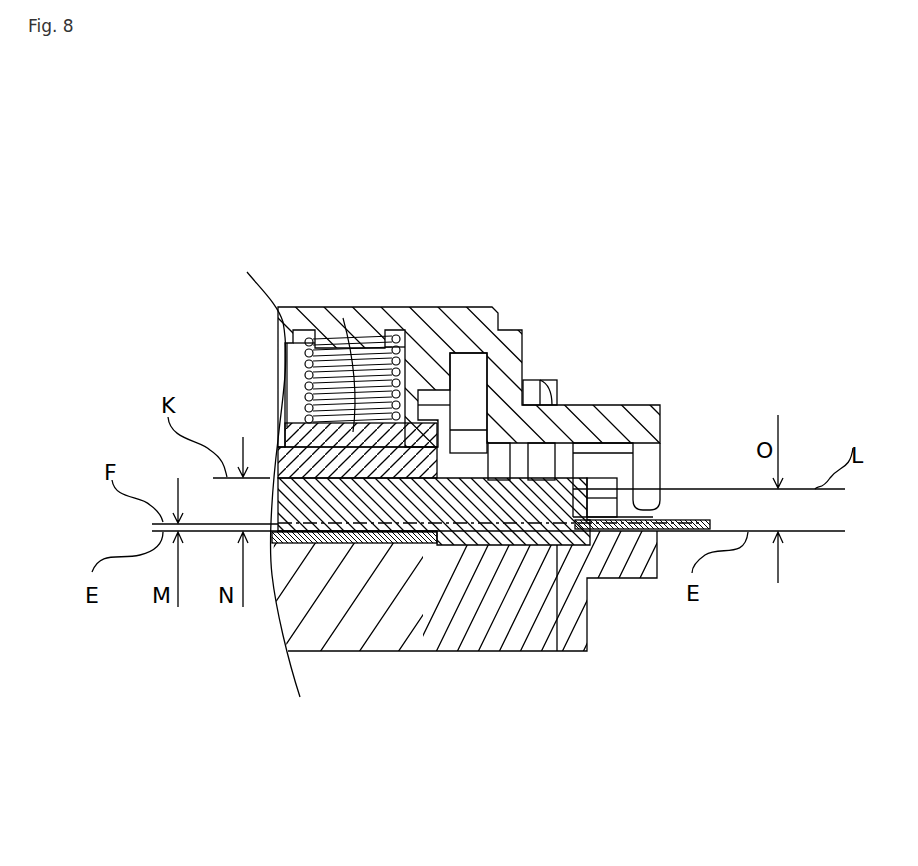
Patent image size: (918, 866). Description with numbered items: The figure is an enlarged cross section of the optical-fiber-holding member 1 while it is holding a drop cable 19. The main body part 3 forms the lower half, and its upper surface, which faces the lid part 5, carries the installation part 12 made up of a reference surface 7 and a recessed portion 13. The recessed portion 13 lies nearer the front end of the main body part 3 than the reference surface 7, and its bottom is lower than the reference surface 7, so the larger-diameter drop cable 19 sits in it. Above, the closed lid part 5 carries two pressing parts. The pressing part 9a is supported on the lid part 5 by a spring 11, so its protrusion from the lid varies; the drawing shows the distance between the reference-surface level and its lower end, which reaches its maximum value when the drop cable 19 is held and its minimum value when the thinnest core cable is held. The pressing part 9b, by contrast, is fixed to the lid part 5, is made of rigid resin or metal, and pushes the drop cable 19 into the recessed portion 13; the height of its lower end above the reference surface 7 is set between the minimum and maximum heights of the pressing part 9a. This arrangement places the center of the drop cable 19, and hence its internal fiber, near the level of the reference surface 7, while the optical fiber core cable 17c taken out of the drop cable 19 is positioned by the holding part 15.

The optical-fiber-holding member 1 is at (568, 208).
The main body part 3 is at (358, 652).
The lid part 5 is at (400, 307).
The reference surface 7 is at (423, 545).
The pressing part 9a is at (295, 330).
The pressing part 9b is at (518, 472).
The spring 11 is at (405, 352).
The installation part 12 is at (640, 707).
The recessed portion 13 is at (562, 652).
The holding part 15 is at (648, 532).
The optical fiber core cable 17c is at (688, 520).
The drop cable 19 is at (283, 548).